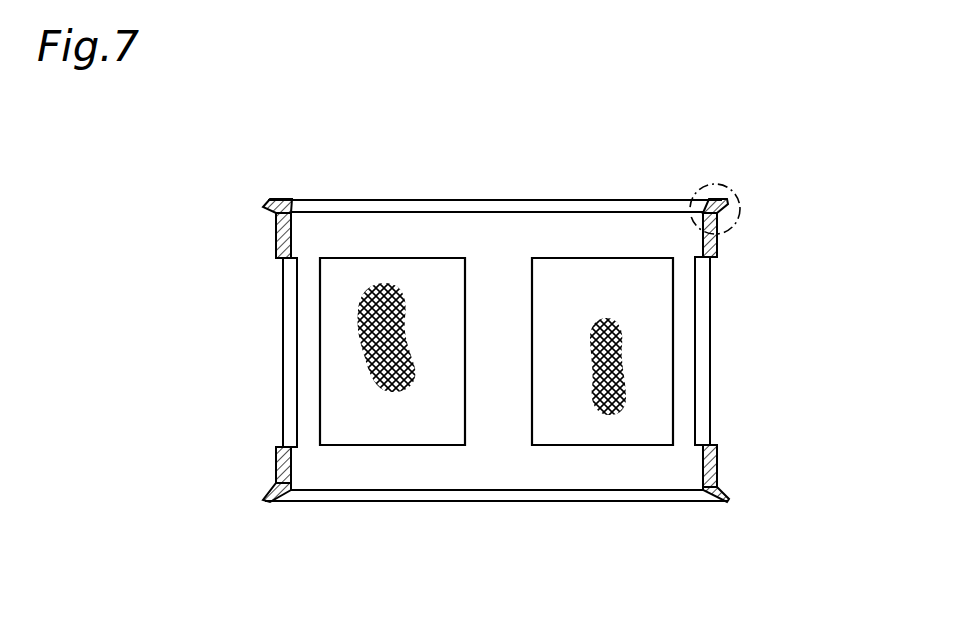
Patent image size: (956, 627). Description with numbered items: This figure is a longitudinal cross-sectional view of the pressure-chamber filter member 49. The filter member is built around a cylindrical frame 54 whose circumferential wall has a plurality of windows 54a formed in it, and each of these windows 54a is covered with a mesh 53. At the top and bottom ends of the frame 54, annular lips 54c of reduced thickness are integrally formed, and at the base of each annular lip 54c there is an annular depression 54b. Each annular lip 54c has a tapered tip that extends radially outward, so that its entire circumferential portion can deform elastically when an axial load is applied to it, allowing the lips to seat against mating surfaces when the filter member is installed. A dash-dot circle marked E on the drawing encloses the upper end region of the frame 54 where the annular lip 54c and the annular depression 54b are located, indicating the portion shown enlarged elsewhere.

The pressure-chamber filter member 49 is at (746, 171).
The mesh 53 is at (603, 420).
The cylindrical frame 54 is at (551, 367).
The windows 54a is at (532, 418).
The annular depression 54b is at (719, 216).
The annular lips 54c is at (726, 204).
The enlarged portion E is at (712, 185).